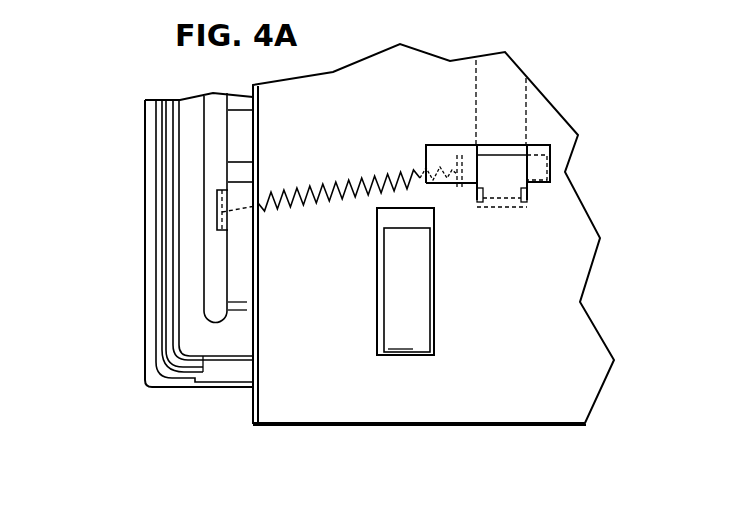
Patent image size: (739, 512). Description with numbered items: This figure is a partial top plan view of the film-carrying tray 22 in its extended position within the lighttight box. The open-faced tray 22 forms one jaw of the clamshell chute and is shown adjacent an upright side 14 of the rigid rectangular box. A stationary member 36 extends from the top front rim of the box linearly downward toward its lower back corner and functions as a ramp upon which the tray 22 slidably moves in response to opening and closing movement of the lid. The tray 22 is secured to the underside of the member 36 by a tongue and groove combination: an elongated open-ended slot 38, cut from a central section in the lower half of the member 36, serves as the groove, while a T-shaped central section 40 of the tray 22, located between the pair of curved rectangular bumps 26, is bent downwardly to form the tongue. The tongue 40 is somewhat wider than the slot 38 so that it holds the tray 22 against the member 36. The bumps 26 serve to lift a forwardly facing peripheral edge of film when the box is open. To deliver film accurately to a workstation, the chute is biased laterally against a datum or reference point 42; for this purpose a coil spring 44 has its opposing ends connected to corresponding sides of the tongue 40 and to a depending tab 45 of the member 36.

The upright side 14 is at (145, 285).
The film-carrying tray 22 is at (550, 220).
The curved rectangular bump 26 is at (420, 292).
The stationary member 36 is at (243, 275).
The elongated open-ended slot 38 is at (522, 124).
The T-shaped central section 40 is at (473, 142).
The datum 42 is at (250, 152).
The coil spring 44 is at (357, 170).
The depending tab 45 is at (222, 212).